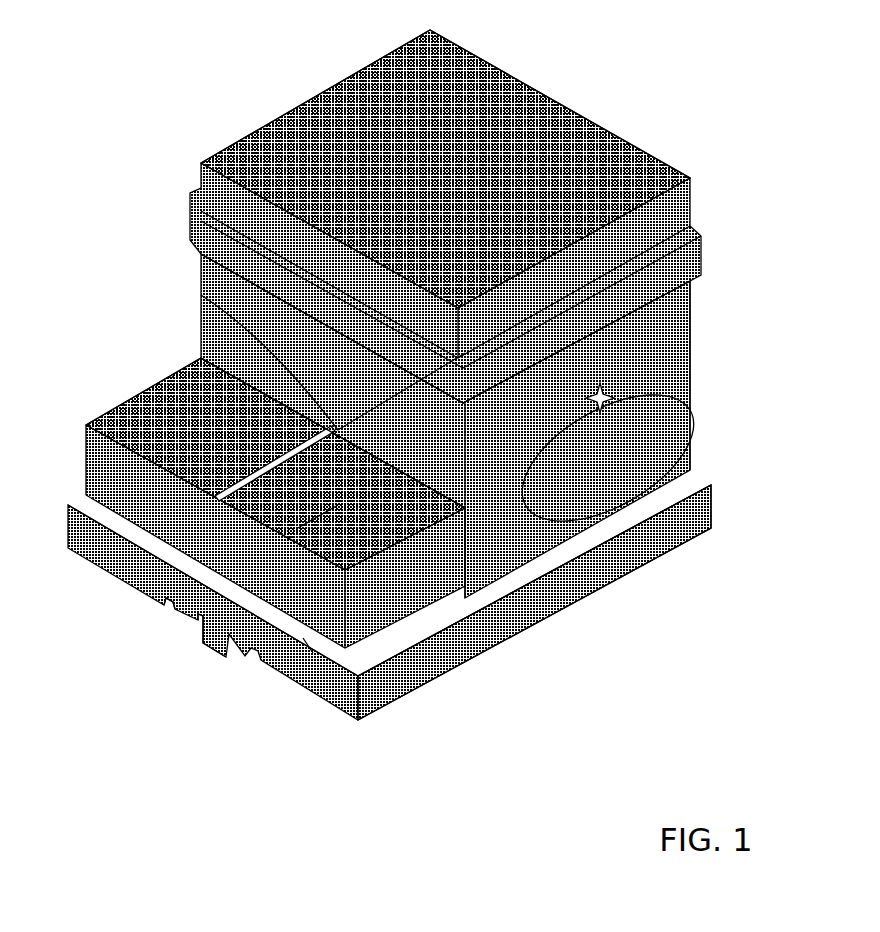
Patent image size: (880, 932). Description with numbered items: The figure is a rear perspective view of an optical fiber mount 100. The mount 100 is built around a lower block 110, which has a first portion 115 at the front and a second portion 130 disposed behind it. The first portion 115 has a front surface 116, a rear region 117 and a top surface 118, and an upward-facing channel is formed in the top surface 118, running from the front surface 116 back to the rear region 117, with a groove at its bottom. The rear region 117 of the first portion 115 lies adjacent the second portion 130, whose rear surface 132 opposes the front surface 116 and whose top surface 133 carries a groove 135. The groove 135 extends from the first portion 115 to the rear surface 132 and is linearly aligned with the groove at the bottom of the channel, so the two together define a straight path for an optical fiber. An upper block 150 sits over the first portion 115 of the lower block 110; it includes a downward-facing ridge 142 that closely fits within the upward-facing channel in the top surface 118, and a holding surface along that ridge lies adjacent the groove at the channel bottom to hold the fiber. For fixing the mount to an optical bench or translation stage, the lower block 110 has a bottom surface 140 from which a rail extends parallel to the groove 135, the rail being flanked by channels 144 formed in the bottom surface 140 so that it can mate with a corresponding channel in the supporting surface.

The optical fiber mount 100 is at (425, 417).
The lower block 110 is at (507, 434).
The first portion 115 is at (737, 562).
The front surface 116 is at (683, 368).
The rear region 117 is at (510, 474).
The top surface 118 is at (582, 398).
The second portion 130 is at (411, 651).
The rear surface 132 is at (300, 638).
The top surface 133 is at (315, 505).
The groove 135 is at (246, 452).
The bottom surface 140 is at (251, 503).
The downward-facing ridge 142 is at (203, 638).
The channels 144 is at (173, 612).
The upper block 150 is at (688, 161).